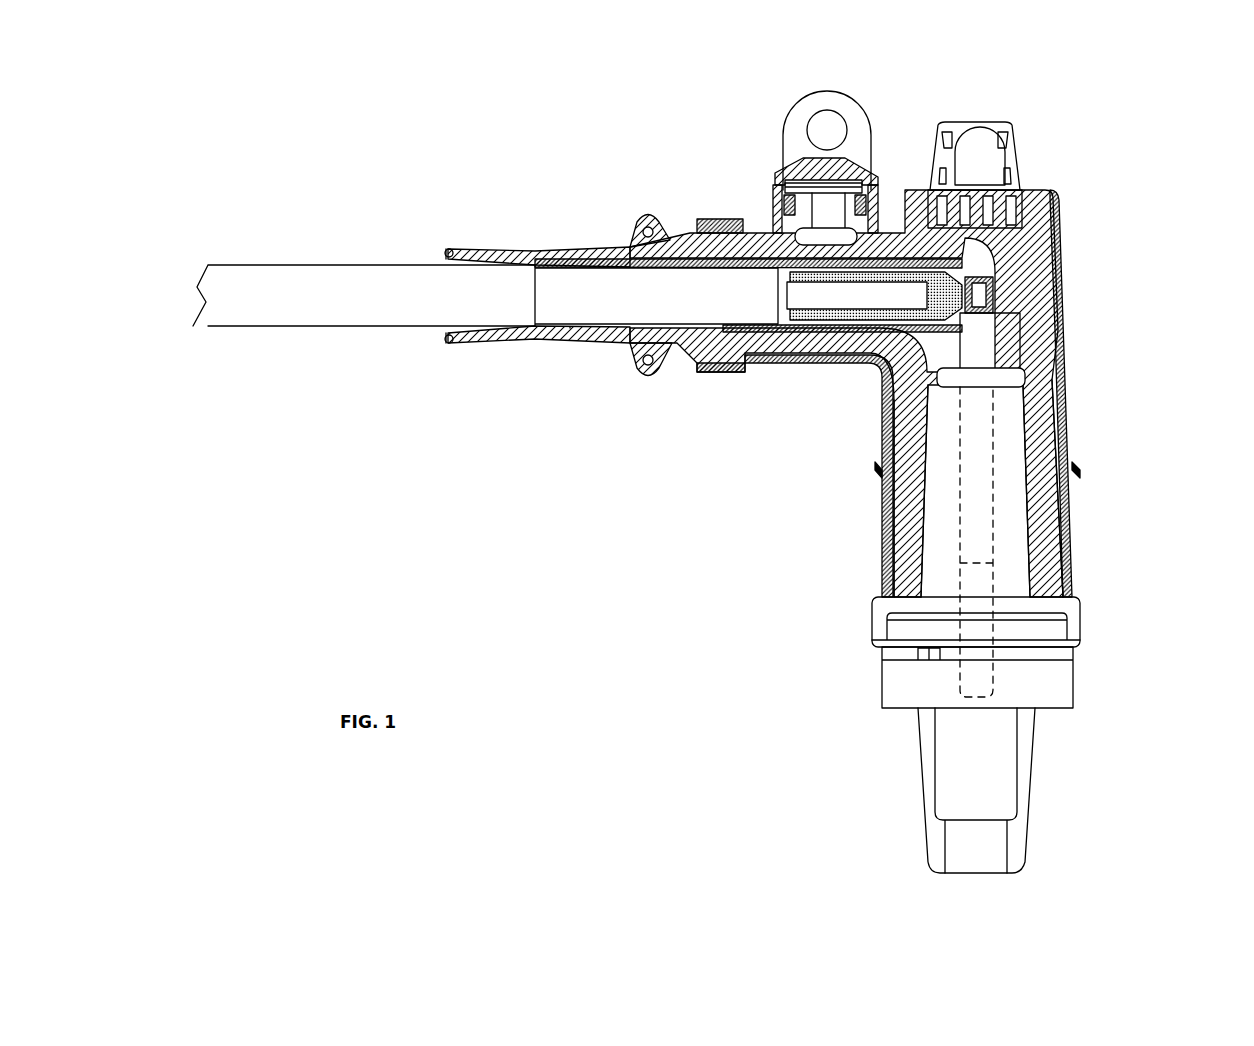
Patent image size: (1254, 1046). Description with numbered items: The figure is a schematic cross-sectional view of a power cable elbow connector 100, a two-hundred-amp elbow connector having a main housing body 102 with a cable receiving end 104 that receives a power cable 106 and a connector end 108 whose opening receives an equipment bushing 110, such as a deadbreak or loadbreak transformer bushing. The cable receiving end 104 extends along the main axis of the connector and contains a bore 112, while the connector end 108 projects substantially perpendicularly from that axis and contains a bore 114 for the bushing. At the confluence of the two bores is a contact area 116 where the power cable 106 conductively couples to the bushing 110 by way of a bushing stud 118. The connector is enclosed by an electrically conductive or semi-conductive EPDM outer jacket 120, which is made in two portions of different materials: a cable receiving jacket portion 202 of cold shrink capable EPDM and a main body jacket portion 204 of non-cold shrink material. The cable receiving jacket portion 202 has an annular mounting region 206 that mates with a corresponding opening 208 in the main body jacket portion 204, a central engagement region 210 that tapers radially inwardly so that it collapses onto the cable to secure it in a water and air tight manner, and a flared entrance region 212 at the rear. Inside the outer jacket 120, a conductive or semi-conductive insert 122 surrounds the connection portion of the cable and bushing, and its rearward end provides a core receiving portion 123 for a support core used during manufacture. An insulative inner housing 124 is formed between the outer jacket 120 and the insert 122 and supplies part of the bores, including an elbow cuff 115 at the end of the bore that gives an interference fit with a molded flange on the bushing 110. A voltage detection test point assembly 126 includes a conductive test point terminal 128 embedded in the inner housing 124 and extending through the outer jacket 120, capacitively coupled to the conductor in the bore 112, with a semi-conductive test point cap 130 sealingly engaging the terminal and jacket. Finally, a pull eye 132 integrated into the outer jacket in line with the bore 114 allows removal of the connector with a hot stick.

The power cable elbow connector 100 is at (563, 140).
The main housing body 102 is at (820, 455).
The cable receiving end 104 is at (578, 222).
The power cable 106 is at (485, 295).
The connector end 108 is at (1092, 456).
The bushing 110 is at (955, 735).
The bore 112 is at (630, 330).
The bore 114 is at (1045, 530).
The elbow cuff 115 is at (1075, 632).
The contact area 116 is at (982, 304).
The bushing stud 118 is at (970, 570).
The outer jacket 120 is at (700, 395).
The insert 122 is at (1018, 288).
The core receiving portion 123 is at (748, 333).
The insulative inner housing 124 is at (910, 500).
The voltage detection test point assembly 126 is at (765, 186).
The test point terminal 128 is at (830, 216).
The test point cap 130 is at (862, 130).
The pull eye 132 is at (1010, 157).
The cable receiving jacket portion 202 is at (570, 329).
The main body jacket portion 204 is at (890, 395).
The annular mounting region 206 is at (713, 219).
The opening 208 is at (731, 375).
The central engagement region 210 is at (533, 330).
The flared entrance region 212 is at (457, 337).